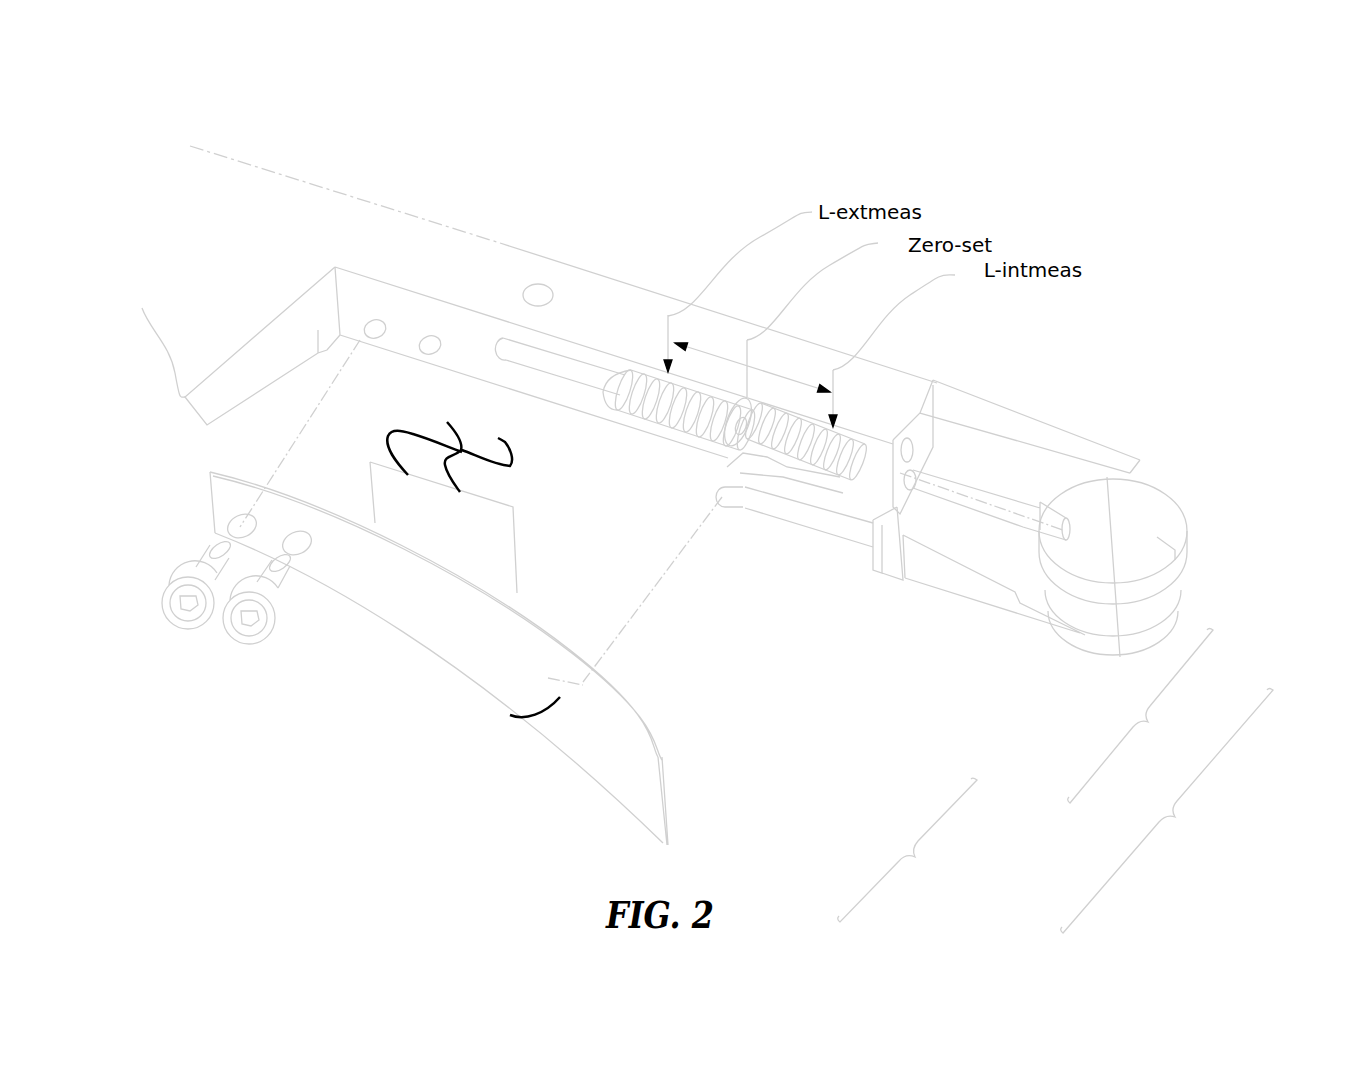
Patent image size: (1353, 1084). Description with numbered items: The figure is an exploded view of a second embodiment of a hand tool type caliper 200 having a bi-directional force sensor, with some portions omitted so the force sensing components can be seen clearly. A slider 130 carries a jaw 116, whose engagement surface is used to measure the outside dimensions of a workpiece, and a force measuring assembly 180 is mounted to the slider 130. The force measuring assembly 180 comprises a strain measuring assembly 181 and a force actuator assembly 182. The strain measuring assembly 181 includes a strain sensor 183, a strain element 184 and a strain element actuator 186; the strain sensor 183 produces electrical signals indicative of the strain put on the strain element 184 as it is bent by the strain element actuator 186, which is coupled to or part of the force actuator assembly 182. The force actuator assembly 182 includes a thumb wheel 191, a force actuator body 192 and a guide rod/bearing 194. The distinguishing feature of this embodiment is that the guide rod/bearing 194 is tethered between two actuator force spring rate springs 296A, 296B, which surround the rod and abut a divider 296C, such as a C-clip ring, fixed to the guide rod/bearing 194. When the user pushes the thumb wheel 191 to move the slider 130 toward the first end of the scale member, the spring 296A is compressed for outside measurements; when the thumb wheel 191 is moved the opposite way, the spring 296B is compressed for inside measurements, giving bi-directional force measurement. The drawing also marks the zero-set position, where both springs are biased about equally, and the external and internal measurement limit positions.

The hand tool type caliper 200 is at (1107, 131).
The slider 130 is at (302, 198).
The jaw 116 is at (198, 315).
The guide rod/bearing 194 is at (515, 357).
The strain sensor 183 is at (427, 523).
The strain element 184 is at (613, 725).
The strain element actuator 186 is at (743, 503).
The actuator force spring rate spring 296A is at (690, 415).
The actuator force spring rate spring 296B is at (805, 447).
The divider 296C is at (740, 500).
The force actuator body 192 is at (1035, 603).
The thumb wheel 191 is at (1085, 643).
The strain measuring assembly 181 is at (925, 850).
The force actuator assembly 182 is at (1140, 716).
The force measuring assembly 180 is at (1182, 811).